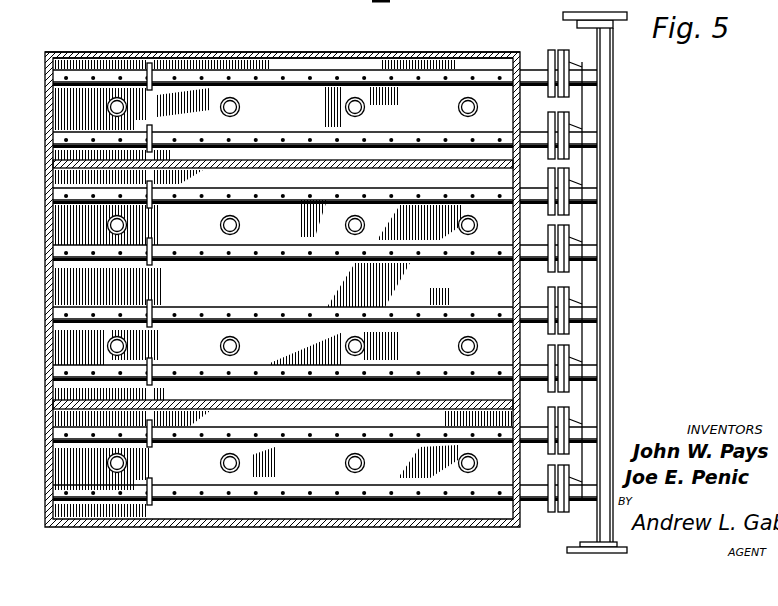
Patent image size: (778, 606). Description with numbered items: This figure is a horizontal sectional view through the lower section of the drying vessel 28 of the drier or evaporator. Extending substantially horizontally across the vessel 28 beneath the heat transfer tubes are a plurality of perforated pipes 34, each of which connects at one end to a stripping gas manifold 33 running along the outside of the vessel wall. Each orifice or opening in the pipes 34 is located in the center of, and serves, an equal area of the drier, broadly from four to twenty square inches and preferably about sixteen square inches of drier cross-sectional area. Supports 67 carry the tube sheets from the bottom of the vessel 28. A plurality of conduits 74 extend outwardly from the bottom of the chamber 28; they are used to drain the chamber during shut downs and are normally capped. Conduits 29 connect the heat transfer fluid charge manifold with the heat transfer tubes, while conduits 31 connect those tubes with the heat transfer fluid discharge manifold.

The drying vessel 28 is at (71, 38).
The conduits 29 is at (283, 26).
The conduits 31 is at (288, 0).
The stripping gas manifold 33 is at (602, 143).
The perforated pipes 34 is at (284, 86).
The supports 67 is at (178, 187).
The conduits 74 is at (452, 101).